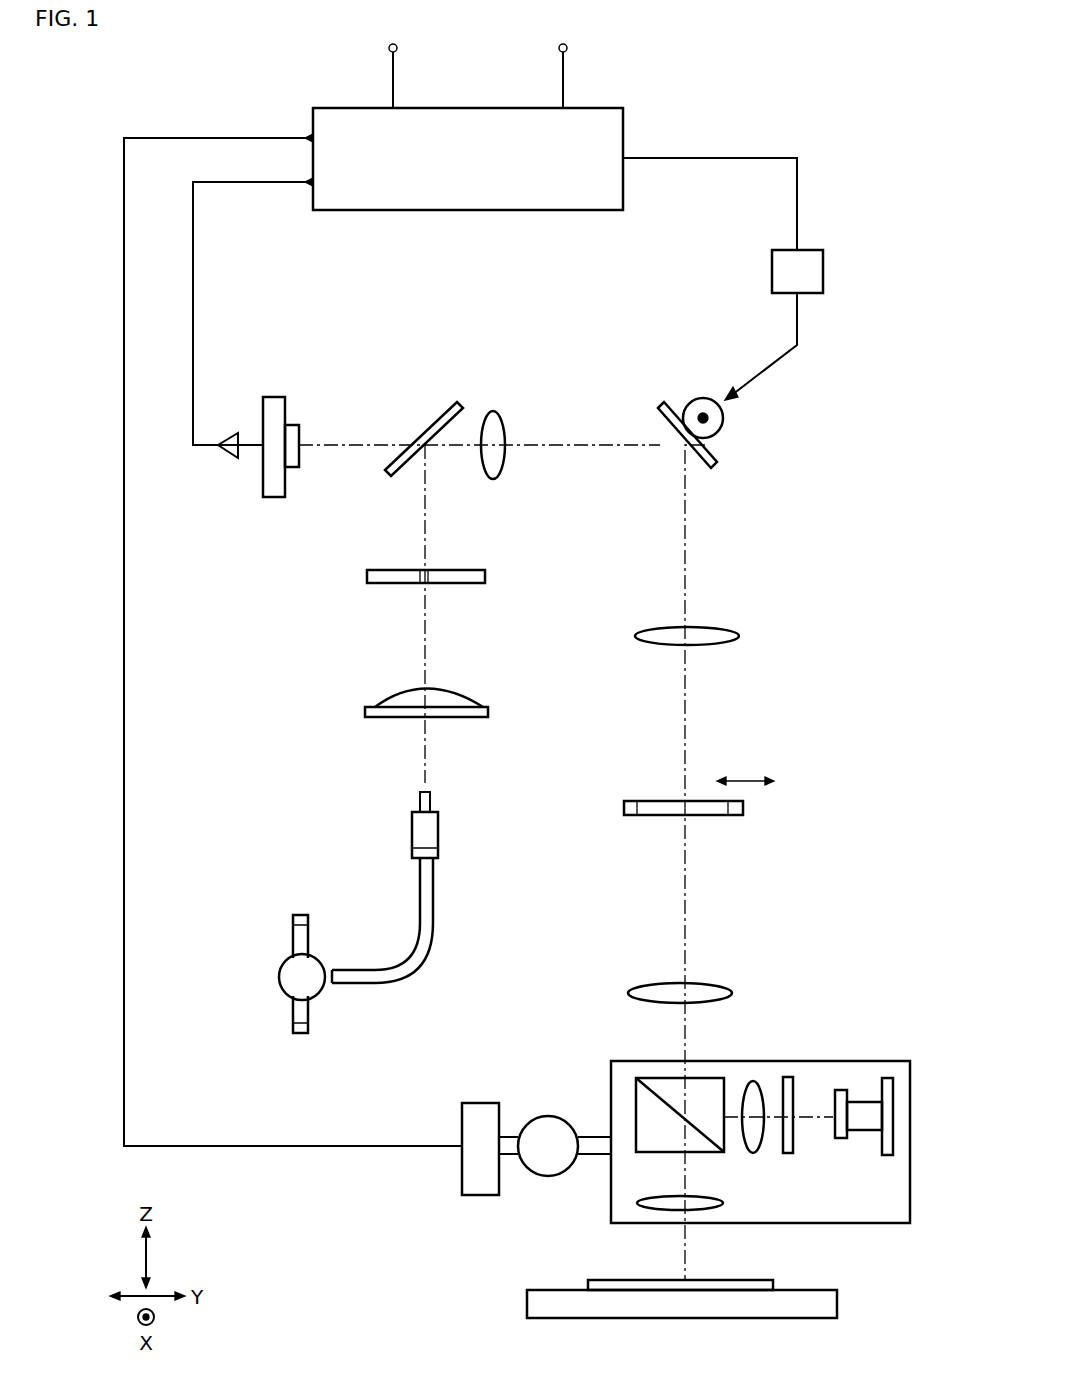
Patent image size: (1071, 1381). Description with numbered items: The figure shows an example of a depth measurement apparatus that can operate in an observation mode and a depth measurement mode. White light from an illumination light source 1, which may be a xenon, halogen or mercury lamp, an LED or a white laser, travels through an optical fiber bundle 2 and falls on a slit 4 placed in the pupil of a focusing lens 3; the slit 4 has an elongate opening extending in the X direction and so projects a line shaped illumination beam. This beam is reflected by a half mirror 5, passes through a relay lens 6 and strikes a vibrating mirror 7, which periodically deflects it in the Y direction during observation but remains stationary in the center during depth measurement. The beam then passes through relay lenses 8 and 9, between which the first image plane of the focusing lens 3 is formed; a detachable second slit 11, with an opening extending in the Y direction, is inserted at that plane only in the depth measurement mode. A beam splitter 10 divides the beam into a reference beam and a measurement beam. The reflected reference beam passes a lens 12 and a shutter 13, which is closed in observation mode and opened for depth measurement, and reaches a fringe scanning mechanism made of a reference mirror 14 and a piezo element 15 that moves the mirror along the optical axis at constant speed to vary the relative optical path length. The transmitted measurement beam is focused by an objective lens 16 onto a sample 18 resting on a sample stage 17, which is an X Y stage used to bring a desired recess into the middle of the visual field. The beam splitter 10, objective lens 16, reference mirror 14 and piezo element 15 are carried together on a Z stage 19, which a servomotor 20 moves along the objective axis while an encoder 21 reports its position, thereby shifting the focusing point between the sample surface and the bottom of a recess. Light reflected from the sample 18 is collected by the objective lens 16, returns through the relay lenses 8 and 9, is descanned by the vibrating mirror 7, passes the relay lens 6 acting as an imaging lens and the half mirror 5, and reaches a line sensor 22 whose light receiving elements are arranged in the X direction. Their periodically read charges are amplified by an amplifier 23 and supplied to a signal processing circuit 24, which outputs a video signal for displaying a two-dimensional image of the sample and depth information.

The illumination light source 1 is at (290, 958).
The optical fiber bundle 2 is at (410, 817).
The focusing lens 3 is at (372, 700).
The slit 4 is at (367, 572).
The half mirror 5 is at (457, 402).
The relay lens 6 is at (494, 411).
The vibrating mirror 7 is at (723, 422).
The relay lens 8 is at (739, 628).
The relay lens 9 is at (731, 986).
The beam splitter 10 is at (707, 1153).
The second slit 11 is at (743, 808).
The lens 12 is at (750, 1080).
The shutter 13 is at (788, 1075).
The reference mirror 14 is at (832, 1127).
The piezo element 15 is at (853, 1132).
The objective lens 16 is at (655, 1212).
The sample stage 17 is at (825, 1290).
The sample 18 is at (760, 1278).
The Z stage 19 is at (870, 1061).
The servomotor 20 is at (547, 1176).
The encoder 21 is at (485, 1195).
The line sensor 22 is at (280, 497).
The amplifier 23 is at (220, 460).
The signal processing circuit 24 is at (610, 108).